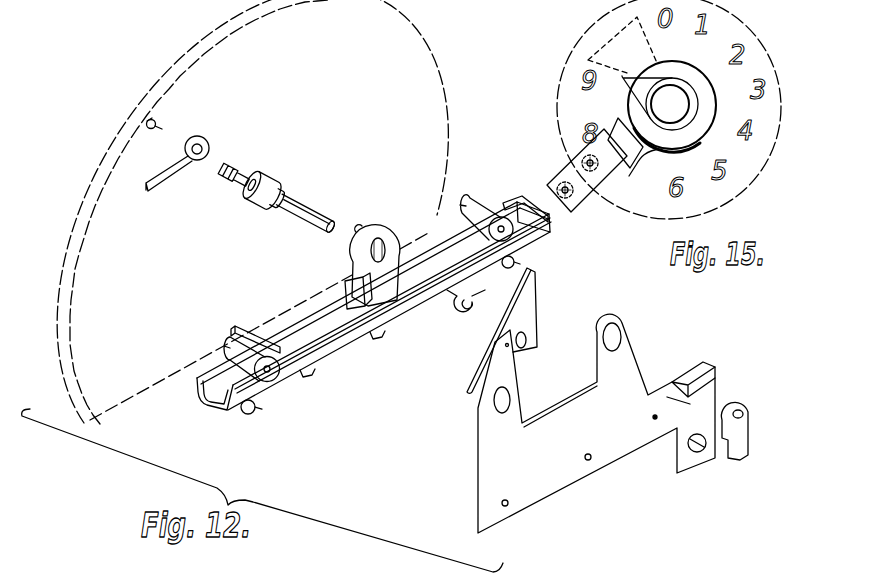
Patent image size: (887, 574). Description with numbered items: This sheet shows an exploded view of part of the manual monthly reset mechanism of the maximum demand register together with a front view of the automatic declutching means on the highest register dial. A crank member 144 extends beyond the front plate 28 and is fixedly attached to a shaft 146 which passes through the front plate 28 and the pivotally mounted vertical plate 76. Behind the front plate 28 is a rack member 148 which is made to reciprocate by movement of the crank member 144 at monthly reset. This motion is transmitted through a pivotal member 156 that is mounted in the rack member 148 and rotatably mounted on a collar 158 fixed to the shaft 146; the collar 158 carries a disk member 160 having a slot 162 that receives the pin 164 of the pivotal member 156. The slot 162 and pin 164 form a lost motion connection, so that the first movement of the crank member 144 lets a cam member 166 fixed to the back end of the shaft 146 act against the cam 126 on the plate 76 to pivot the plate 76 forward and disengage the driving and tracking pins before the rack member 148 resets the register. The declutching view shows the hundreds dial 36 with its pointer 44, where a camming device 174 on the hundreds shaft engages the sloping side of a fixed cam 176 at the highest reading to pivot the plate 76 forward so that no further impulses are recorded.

In FIG. 12, the front plate 28 is at (100, 185).
In FIG. 12, the crank member 144 is at (199, 140).
In FIG. 12, the slot 162 is at (264, 165).
In FIG. 12, the disk member 160 is at (284, 168).
In FIG. 12, the collar 158 is at (292, 186).
In FIG. 12, the shaft 146 is at (306, 195).
In FIG. 12, the pivotal member 156 is at (380, 228).
In FIG. 12, the pin 164 is at (357, 230).
In FIG. 12, the rack member 148 is at (200, 391).
In FIG. 12, the pivotally mounted vertical plate 76 is at (627, 360).
In FIG. 12, the cam 126 is at (697, 452).
In FIG. 12, the cam member 166 is at (740, 460).
In FIG. 15, the register pointer 44 is at (623, 76).
In FIG. 15, the camming device 174 is at (633, 140).
In FIG. 15, the fixed cam 176 is at (585, 190).
In FIG. 15, the hundreds dial 36 is at (723, 193).